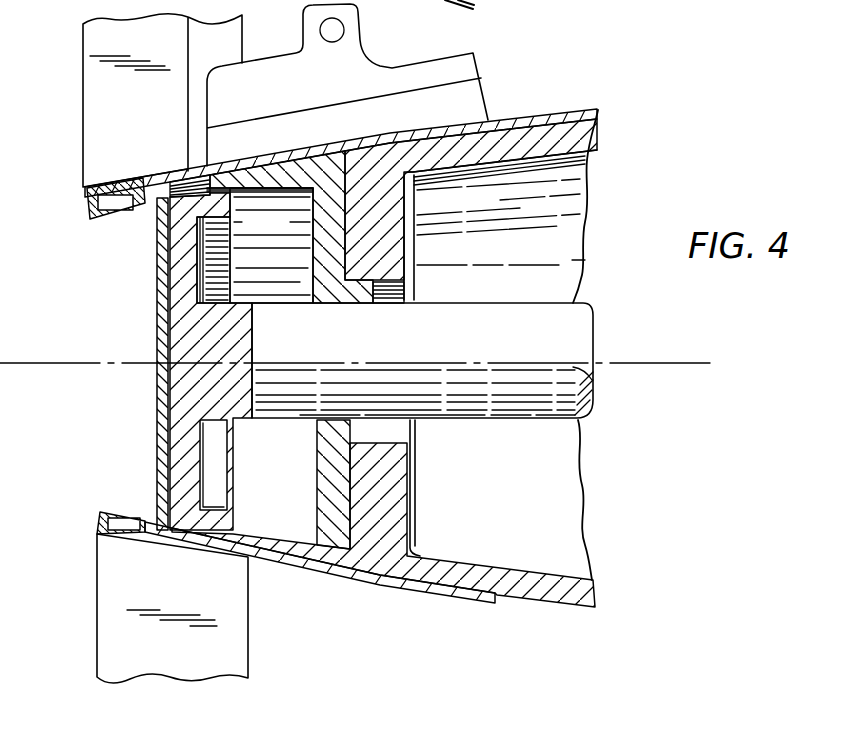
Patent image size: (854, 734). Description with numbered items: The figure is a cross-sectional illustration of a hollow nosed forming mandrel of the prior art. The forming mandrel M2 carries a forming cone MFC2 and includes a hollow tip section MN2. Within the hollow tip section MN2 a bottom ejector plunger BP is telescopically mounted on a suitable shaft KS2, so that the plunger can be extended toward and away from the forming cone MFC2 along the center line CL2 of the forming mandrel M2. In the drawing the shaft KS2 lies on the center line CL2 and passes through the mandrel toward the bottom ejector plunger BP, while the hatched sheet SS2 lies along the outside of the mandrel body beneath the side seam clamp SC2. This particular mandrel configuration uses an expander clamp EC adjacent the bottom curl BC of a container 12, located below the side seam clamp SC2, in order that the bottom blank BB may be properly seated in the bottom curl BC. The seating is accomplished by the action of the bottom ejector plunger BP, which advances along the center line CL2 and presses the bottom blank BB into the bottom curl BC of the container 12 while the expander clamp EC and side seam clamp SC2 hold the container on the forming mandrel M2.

The expander clamp EC is at (147, 110).
The side seam clamp SC2 is at (304, 100).
The second stator sheet SS2 is at (327, 142).
The bottom curl BC is at (85, 208).
The bottom blank BB is at (157, 287).
The bottom ejector plunger BP is at (220, 345).
The hollow tip section MN2 is at (244, 194).
The forming cone MFC2 is at (440, 163).
The forming mandrel M2 is at (501, 345).
The shaft KS2 is at (480, 307).
The center line CL2 is at (648, 358).
The container 12 is at (292, 565).